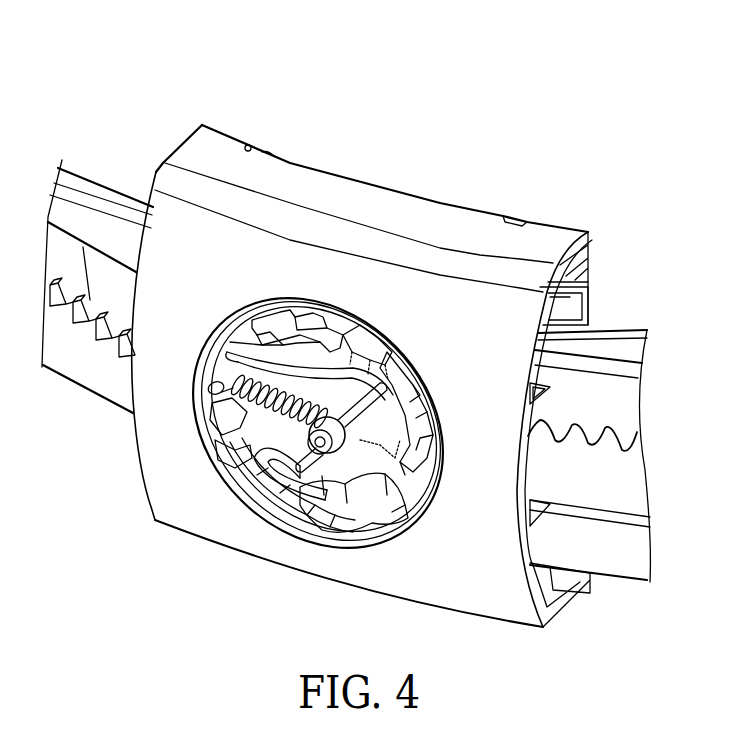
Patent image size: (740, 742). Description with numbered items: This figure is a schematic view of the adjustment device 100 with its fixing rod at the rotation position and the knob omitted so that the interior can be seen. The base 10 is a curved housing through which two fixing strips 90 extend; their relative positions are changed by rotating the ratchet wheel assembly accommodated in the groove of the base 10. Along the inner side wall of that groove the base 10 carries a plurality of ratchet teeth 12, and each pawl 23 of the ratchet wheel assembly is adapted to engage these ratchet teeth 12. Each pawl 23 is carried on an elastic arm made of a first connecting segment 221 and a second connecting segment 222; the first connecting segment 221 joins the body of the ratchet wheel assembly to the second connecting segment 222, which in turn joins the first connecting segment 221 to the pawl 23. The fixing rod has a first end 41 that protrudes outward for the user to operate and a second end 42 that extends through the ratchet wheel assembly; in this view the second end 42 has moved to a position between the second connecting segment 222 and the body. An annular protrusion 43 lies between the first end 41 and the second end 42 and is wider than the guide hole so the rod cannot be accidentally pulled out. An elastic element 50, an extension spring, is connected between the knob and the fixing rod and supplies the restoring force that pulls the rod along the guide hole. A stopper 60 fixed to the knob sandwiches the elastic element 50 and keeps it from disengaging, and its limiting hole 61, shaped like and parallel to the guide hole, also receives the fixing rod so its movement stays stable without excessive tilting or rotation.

The adjustment device 100 is at (172, 78).
The base 10 is at (478, 228).
The ratchet teeth 12 is at (243, 328).
The pawl 23 is at (268, 330).
The second connecting segment 222 is at (307, 348).
The second end 42 is at (367, 322).
The first connecting segment 221 is at (397, 363).
The fixing strips 90 is at (91, 184).
The elastic element 50 is at (235, 467).
The first end 41 is at (268, 492).
The annular protrusion 43 is at (292, 512).
The stopper 60 is at (313, 530).
The limiting hole 61 is at (360, 470).